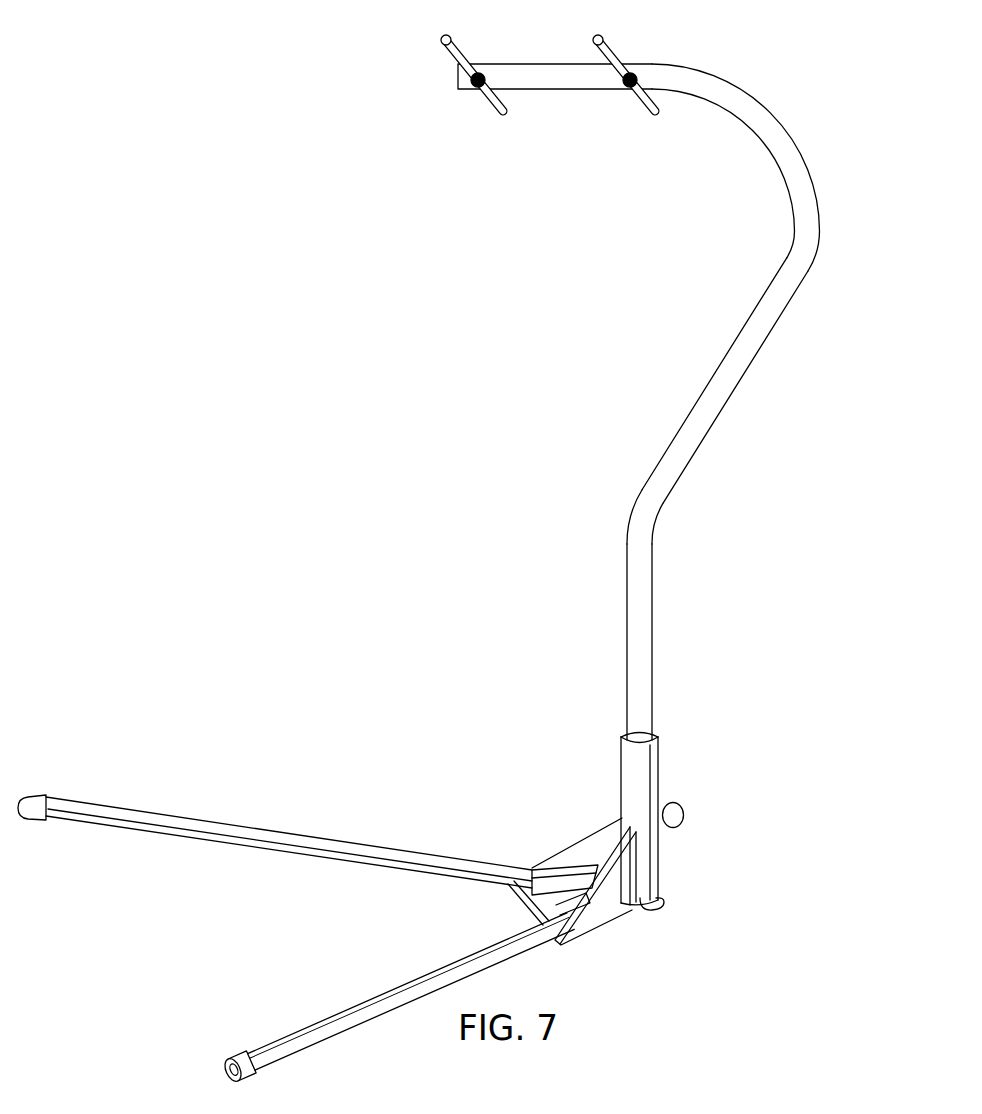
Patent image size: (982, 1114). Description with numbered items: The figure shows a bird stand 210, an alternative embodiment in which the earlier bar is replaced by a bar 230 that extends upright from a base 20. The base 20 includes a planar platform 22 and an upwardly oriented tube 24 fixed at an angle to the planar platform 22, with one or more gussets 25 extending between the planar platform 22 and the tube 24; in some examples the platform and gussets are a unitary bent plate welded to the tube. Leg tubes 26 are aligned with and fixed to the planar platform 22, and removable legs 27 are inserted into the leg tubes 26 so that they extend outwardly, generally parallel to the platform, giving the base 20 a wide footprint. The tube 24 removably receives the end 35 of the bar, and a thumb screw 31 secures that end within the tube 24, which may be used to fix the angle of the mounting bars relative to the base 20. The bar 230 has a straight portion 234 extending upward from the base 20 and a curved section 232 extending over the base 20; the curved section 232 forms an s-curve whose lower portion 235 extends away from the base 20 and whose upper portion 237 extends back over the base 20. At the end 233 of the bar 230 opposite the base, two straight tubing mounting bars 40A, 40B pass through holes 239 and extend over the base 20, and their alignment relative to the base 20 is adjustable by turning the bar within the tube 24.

The bird stand 210 is at (116, 100).
The bar 230 is at (637, 600).
The end of bar 233 is at (570, 80).
The upper portion of the s-curve 237 is at (752, 100).
The curved section 232 is at (767, 327).
The lower portion of the s-curve 235 is at (637, 523).
The straight portion 234 is at (623, 660).
The mounting bar 40A is at (445, 35).
The mounting bar 40B is at (596, 35).
The holes 239 is at (475, 92).
The base 20 is at (660, 773).
The upwardly oriented tube 24 is at (618, 760).
The end of bar 35 is at (660, 907).
The thumb screw 31 is at (675, 828).
The gussets 25 is at (600, 838).
The leg tubes 26 is at (562, 863).
The planar platform 22 is at (528, 898).
The removable legs 27 is at (237, 825).